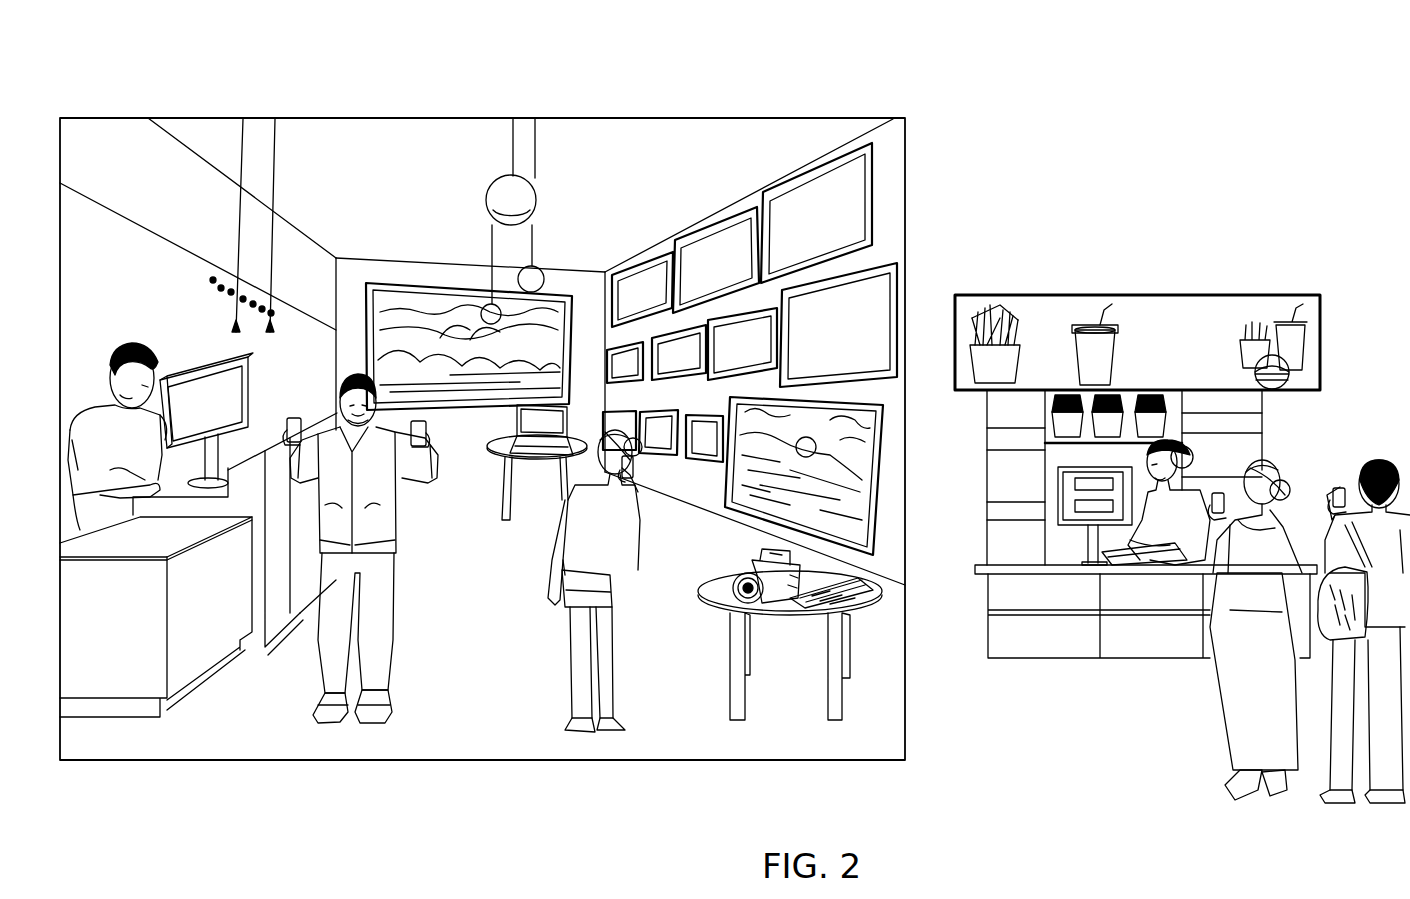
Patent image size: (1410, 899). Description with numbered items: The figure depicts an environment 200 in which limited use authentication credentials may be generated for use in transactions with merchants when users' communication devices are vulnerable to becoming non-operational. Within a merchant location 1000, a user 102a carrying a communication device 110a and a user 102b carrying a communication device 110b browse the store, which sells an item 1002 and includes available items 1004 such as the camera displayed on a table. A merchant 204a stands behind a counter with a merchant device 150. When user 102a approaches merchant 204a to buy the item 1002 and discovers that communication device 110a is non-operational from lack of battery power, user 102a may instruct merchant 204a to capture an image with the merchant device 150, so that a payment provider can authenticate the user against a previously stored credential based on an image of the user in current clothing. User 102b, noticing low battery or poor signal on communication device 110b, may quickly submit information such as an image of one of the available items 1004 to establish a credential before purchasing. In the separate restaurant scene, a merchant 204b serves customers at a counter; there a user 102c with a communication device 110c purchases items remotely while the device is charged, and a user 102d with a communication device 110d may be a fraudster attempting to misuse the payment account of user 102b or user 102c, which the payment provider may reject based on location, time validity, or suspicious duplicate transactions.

The environment 200 is at (980, 78).
The merchant location 1000 is at (478, 209).
The merchant device 150 is at (197, 362).
The merchant 204a is at (130, 348).
The merchant 204b is at (1190, 445).
The user 102a is at (372, 598).
The user 102b is at (585, 675).
The user 102c is at (1350, 785).
The user 102d is at (1236, 668).
The communication device 110a is at (292, 416).
The communication device 110b is at (573, 472).
The communication device 110c is at (1330, 494).
The communication device 110d is at (1225, 498).
The item 1002 is at (430, 426).
The available items 1004 is at (747, 556).